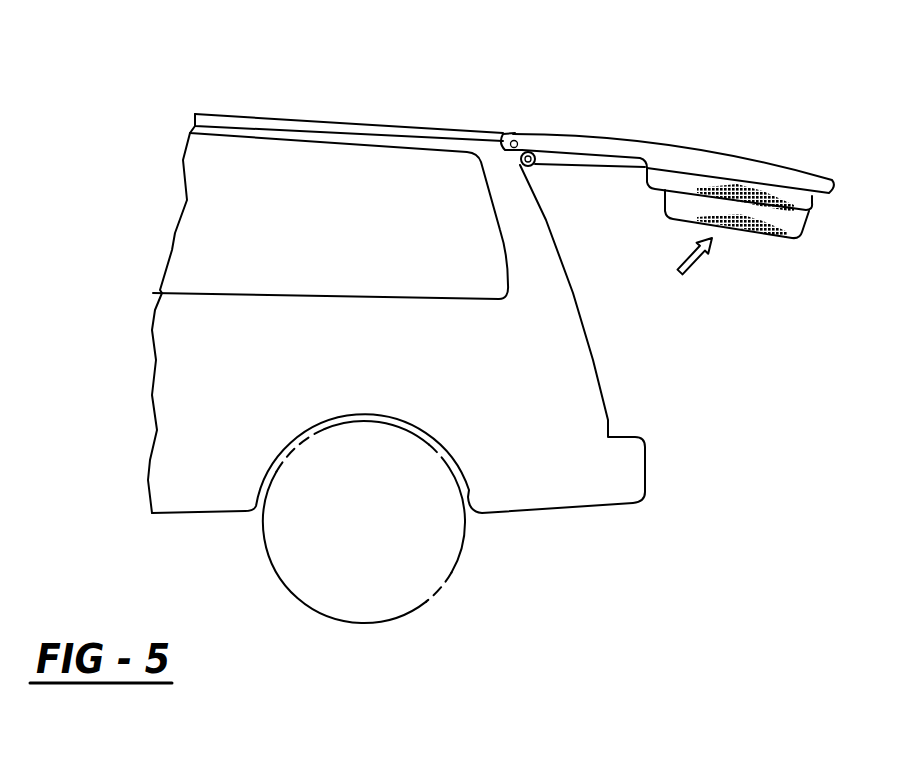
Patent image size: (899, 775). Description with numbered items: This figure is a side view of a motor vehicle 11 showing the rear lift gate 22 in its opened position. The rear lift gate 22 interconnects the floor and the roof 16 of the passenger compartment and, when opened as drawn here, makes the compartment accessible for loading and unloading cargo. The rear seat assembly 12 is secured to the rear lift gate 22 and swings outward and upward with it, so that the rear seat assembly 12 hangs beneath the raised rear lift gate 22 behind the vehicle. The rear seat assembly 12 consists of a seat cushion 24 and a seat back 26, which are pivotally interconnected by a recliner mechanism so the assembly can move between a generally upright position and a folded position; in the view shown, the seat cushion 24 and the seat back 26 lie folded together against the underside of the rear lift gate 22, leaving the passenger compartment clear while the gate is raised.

The motor vehicle 11 is at (400, 122).
The rear seat assembly 12 is at (788, 164).
The roof 16 is at (481, 136).
The rear lift gate 22 is at (630, 138).
The seat cushion 24 is at (761, 238).
The seat back 26 is at (724, 180).